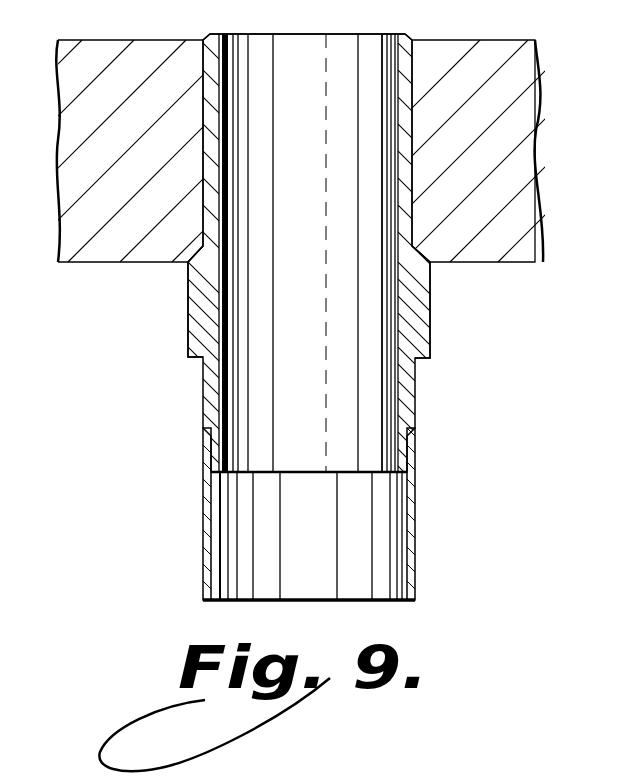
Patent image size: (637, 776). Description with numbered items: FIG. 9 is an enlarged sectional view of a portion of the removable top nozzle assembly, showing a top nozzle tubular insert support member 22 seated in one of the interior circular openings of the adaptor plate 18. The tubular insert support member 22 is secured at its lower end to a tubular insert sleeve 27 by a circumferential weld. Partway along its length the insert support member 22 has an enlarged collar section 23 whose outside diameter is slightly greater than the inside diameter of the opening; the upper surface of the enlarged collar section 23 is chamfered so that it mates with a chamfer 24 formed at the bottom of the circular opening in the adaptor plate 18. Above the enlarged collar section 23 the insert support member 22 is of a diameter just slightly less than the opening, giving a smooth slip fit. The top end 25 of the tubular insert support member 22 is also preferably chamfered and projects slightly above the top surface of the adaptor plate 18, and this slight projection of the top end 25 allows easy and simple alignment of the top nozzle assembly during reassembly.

The adaptor plate 18 is at (462, 44).
The tubular insert support member 22 is at (405, 399).
The enlarged collar section 23 is at (420, 310).
The chamfer 24 is at (200, 252).
The top end 25 is at (213, 33).
The tubular insert sleeve 27 is at (418, 525).